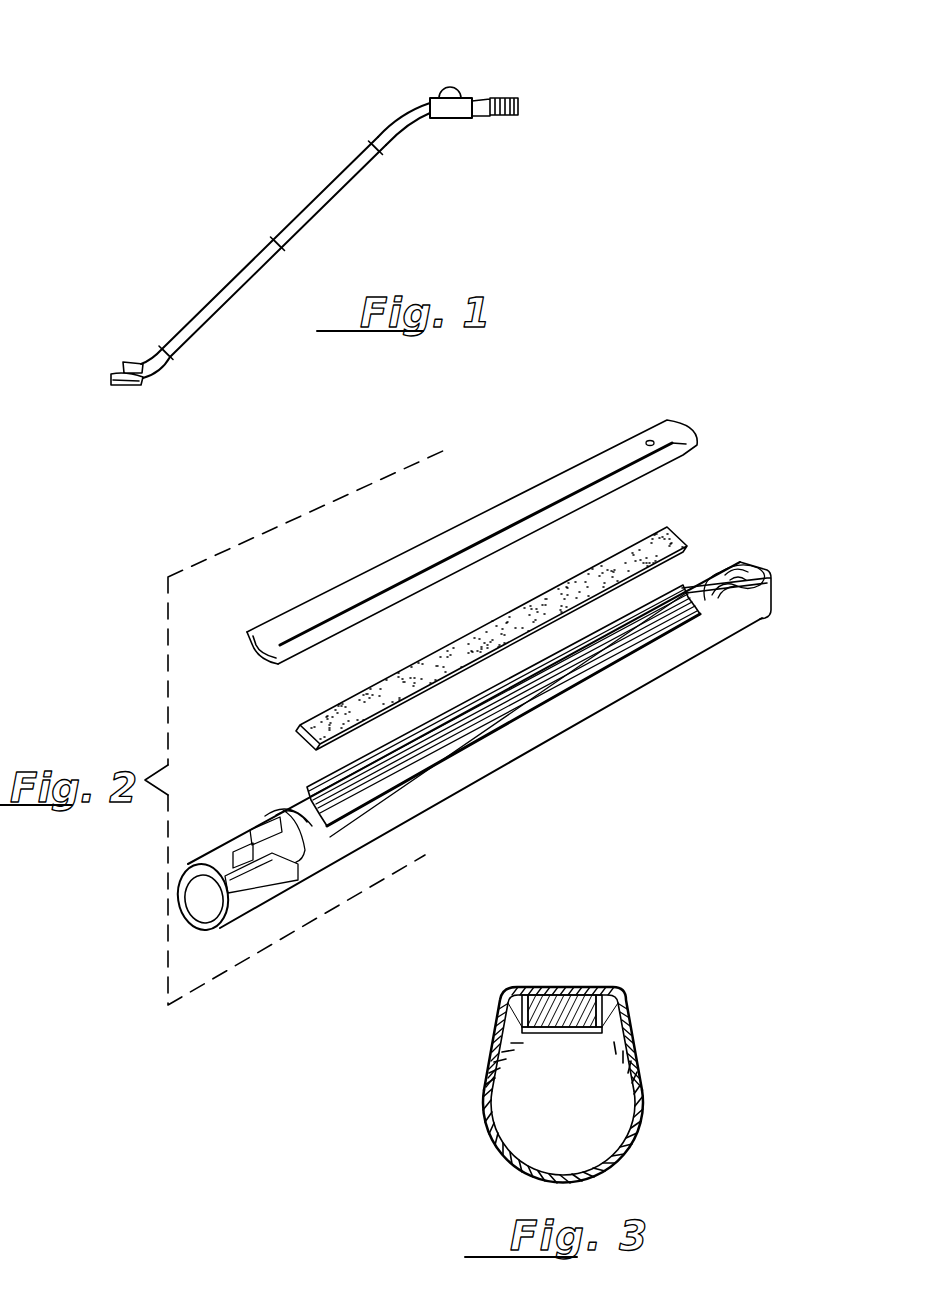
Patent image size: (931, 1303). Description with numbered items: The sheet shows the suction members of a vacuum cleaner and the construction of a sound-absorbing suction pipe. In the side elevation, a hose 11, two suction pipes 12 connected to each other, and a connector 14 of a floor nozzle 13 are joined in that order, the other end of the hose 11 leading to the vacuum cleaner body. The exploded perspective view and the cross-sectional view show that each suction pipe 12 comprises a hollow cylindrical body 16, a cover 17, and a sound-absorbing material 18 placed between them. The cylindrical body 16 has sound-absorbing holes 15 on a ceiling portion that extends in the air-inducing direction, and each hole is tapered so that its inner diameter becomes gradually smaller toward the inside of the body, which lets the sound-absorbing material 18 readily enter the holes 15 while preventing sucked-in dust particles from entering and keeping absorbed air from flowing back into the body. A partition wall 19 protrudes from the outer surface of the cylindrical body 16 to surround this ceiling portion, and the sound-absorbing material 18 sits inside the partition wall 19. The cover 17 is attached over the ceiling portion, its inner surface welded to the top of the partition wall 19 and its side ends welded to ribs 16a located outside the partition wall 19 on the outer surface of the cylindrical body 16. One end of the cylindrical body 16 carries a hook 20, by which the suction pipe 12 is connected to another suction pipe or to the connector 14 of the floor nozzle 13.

In FIG. 1, the hose 11 is at (478, 97).
In FIG. 1, the suction pipe 12 is at (338, 178).
In FIG. 2, the suction pipe 12 is at (713, 443).
In FIG. 3, the suction pipe 12 is at (463, 1113).
In FIG. 1, the floor nozzle 13 is at (126, 361).
In FIG. 1, the connector 14 is at (161, 348).
In FIG. 2, the sound-absorbing holes 15 is at (503, 710).
In FIG. 3, the sound-absorbing holes 15 is at (572, 1034).
In FIG. 2, the hollow cylindrical body 16 is at (633, 677).
In FIG. 3, the hollow cylindrical body 16 is at (641, 1127).
In FIG. 3, the ribs 16a is at (625, 1028).
In FIG. 2, the cover 17 is at (535, 500).
In FIG. 3, the cover 17 is at (538, 988).
In FIG. 2, the sound-absorbing material 18 is at (573, 580).
In FIG. 3, the sound-absorbing material 18 is at (557, 996).
In FIG. 2, the partition wall 19 is at (480, 705).
In FIG. 3, the partition wall 19 is at (602, 1018).
In FIG. 2, the hook 20 is at (736, 562).